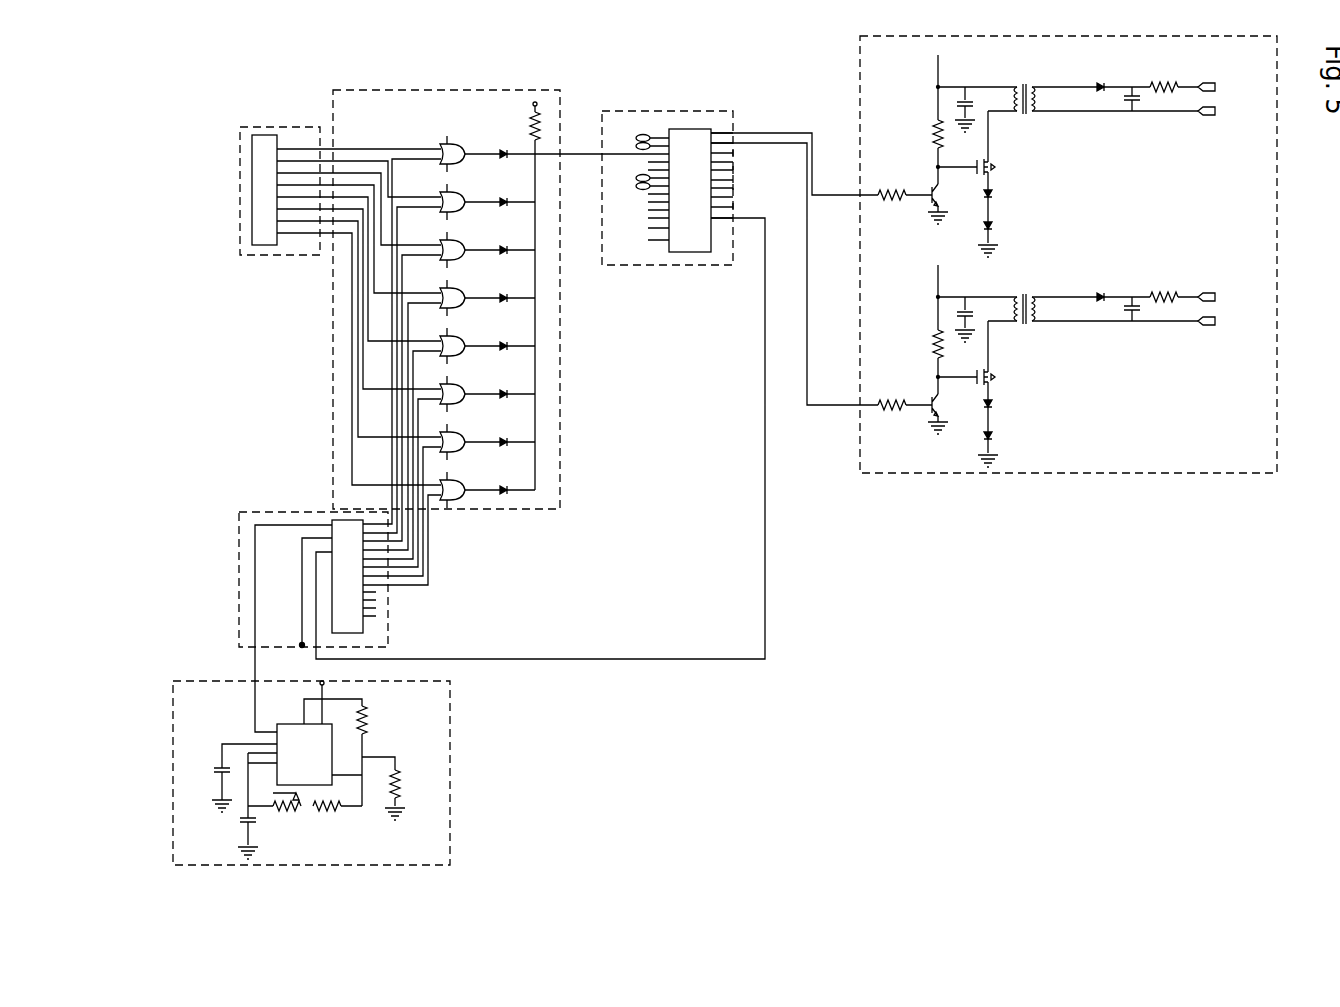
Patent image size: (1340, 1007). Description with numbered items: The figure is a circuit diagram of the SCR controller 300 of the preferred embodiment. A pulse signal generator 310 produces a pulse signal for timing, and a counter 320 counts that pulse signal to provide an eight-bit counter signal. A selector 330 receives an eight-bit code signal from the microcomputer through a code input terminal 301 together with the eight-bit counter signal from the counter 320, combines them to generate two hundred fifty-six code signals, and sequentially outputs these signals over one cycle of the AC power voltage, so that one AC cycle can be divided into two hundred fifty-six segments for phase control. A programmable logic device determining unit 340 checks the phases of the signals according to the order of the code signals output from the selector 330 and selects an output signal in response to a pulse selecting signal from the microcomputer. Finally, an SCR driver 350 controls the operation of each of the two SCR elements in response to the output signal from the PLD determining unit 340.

The SCR controller 300 is at (237, 307).
The code input terminal 301 is at (250, 160).
The pulse signal generator 310 is at (236, 684).
The counter 320 is at (239, 553).
The selector 330 is at (333, 312).
The programmable logic device (PLD) determining unit 340 is at (672, 110).
The SCR driver 350 is at (937, 474).